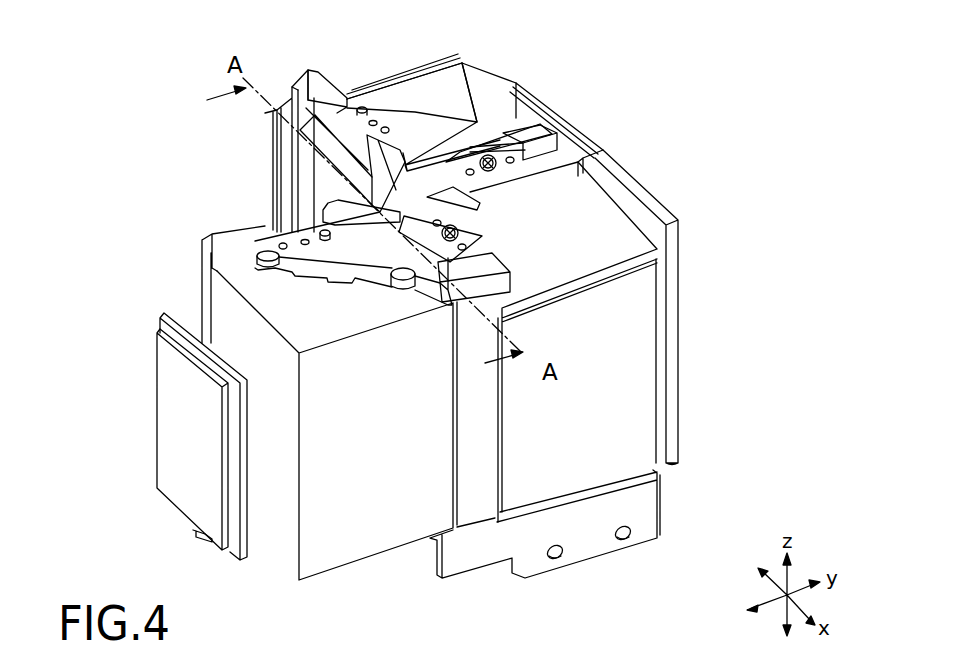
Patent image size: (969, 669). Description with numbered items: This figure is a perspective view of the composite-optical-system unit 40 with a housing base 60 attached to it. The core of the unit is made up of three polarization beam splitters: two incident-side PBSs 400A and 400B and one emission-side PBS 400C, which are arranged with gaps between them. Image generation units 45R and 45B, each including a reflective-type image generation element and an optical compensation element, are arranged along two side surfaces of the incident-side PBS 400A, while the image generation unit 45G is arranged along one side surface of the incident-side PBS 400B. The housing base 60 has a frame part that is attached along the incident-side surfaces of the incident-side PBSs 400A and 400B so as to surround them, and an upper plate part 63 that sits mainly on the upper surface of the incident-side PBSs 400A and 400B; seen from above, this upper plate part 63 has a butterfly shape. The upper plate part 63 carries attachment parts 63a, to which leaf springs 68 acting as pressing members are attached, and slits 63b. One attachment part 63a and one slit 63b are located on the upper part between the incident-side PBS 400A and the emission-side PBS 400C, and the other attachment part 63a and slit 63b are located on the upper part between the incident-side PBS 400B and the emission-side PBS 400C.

The composite-optical-system unit 40 is at (403, 294).
The image generation unit 45B is at (367, 80).
The image generation unit 45R is at (562, 123).
The image generation unit 45G is at (178, 400).
The housing base 60 is at (445, 117).
The upper plate part 63 is at (525, 100).
The attachment part 63a is at (552, 147).
The slit 63b is at (422, 167).
The leaf spring 68 is at (478, 152).
The incident-side polarization beam splitter 400A is at (483, 100).
The incident-side polarization beam splitter 400B is at (360, 537).
The emission-side polarization beam splitter 400C is at (618, 235).